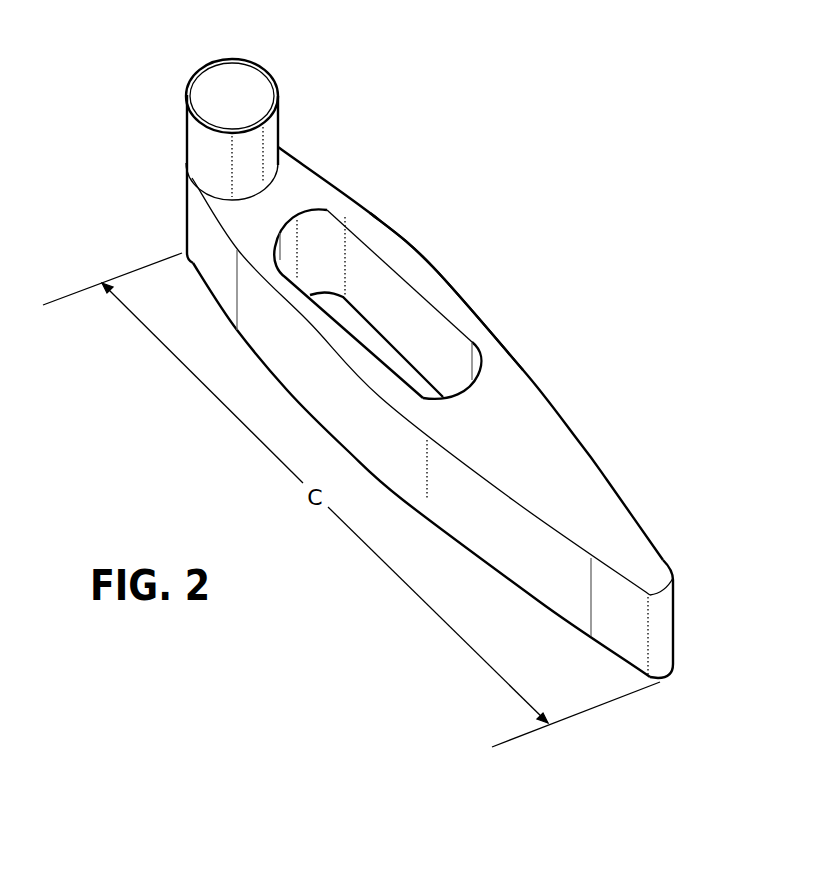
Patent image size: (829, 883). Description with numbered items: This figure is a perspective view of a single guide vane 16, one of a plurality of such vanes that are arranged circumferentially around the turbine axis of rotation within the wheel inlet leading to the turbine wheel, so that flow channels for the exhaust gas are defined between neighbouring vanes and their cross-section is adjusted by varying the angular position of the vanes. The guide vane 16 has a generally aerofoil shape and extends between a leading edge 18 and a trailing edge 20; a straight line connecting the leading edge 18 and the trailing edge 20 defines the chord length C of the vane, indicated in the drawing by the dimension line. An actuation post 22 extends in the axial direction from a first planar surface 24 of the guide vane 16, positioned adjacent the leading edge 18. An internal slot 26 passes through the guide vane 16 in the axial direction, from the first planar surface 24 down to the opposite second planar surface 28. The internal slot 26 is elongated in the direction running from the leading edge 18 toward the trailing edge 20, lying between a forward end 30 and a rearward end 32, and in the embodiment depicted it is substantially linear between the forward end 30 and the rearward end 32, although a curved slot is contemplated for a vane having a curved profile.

The guide vane 16 is at (597, 458).
The leading edge 18 is at (190, 218).
The trailing edge 20 is at (673, 627).
The actuation post 22 is at (252, 83).
The first planar surface 24 is at (633, 545).
The internal slot 26 is at (433, 280).
The second planar surface 28 is at (553, 578).
The forward end 30 is at (330, 230).
The rearward end 32 is at (482, 373).